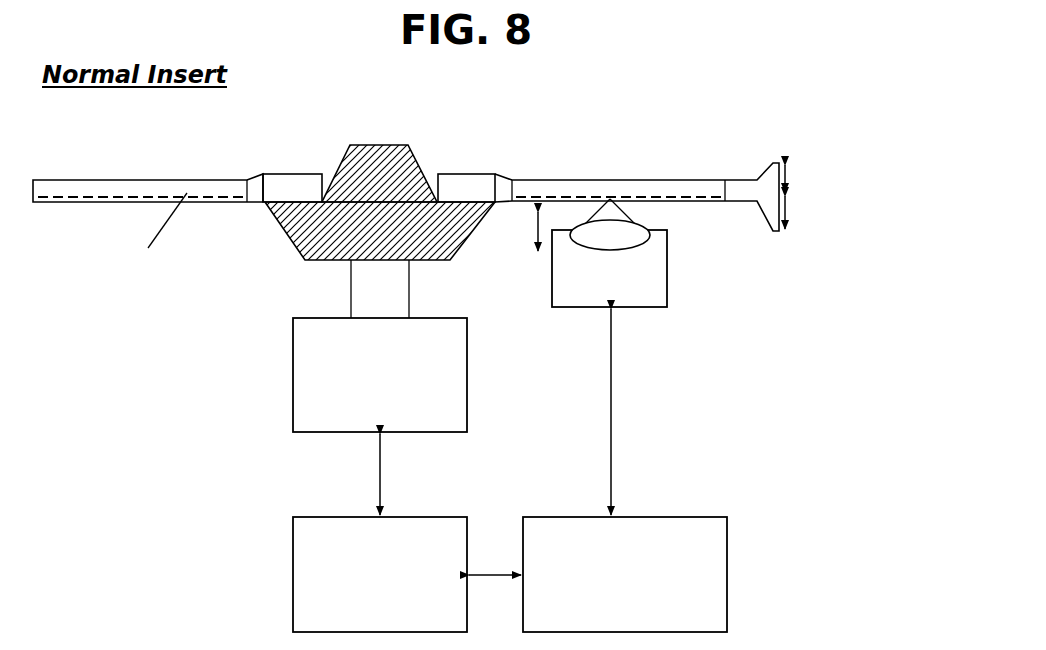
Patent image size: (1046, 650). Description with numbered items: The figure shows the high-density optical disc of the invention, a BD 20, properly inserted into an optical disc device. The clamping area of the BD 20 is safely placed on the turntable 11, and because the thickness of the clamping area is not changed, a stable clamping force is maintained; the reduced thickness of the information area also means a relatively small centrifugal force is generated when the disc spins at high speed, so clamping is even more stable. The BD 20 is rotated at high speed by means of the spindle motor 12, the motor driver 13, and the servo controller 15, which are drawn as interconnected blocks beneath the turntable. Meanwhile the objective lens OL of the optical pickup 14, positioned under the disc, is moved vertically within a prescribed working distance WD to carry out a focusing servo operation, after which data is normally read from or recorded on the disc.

The turntable 11 is at (378, 173).
The spindle motor 12 is at (305, 375).
The motor driver 13 is at (307, 566).
The optical pickup 14 is at (658, 288).
The servo controller 15 is at (697, 535).
The BD 20 is at (552, 175).